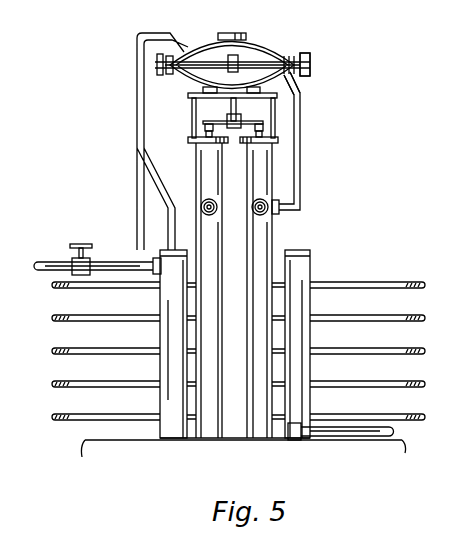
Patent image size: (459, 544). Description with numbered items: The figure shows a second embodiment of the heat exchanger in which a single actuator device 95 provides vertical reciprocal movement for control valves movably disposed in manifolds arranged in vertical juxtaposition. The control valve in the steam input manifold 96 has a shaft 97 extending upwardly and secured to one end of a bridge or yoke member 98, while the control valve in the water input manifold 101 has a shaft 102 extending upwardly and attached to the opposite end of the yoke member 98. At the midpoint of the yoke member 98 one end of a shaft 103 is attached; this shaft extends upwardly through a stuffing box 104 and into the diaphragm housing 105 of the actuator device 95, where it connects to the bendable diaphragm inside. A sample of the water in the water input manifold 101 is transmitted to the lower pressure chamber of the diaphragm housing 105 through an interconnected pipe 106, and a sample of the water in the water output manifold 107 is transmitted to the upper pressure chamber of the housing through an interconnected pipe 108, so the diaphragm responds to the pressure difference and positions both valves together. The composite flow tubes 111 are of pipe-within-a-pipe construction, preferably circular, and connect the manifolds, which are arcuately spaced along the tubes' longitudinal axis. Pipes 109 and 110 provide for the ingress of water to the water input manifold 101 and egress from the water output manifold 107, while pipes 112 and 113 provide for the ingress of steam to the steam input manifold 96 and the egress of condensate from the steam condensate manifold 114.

The actuator device 95 is at (316, 77).
The steam input manifold 96 is at (234, 328).
The shaft 97 is at (192, 128).
The bridge or yoke member 98 is at (263, 130).
The water input manifold 101 is at (273, 238).
The shaft 102 is at (281, 142).
The shaft 103 is at (236, 110).
The stuffing box 104 is at (281, 86).
The diaphragm housing 105 is at (277, 46).
The pipe 106 is at (301, 203).
The water output manifold 107 is at (170, 428).
The pipe 108 is at (137, 122).
The pipe 109 is at (268, 215).
The pipe 110 is at (140, 249).
The composite flow tubes 111 is at (416, 283).
The pipe 112 is at (201, 207).
The pipe 113 is at (352, 441).
The steam condensate manifold 114 is at (312, 274).